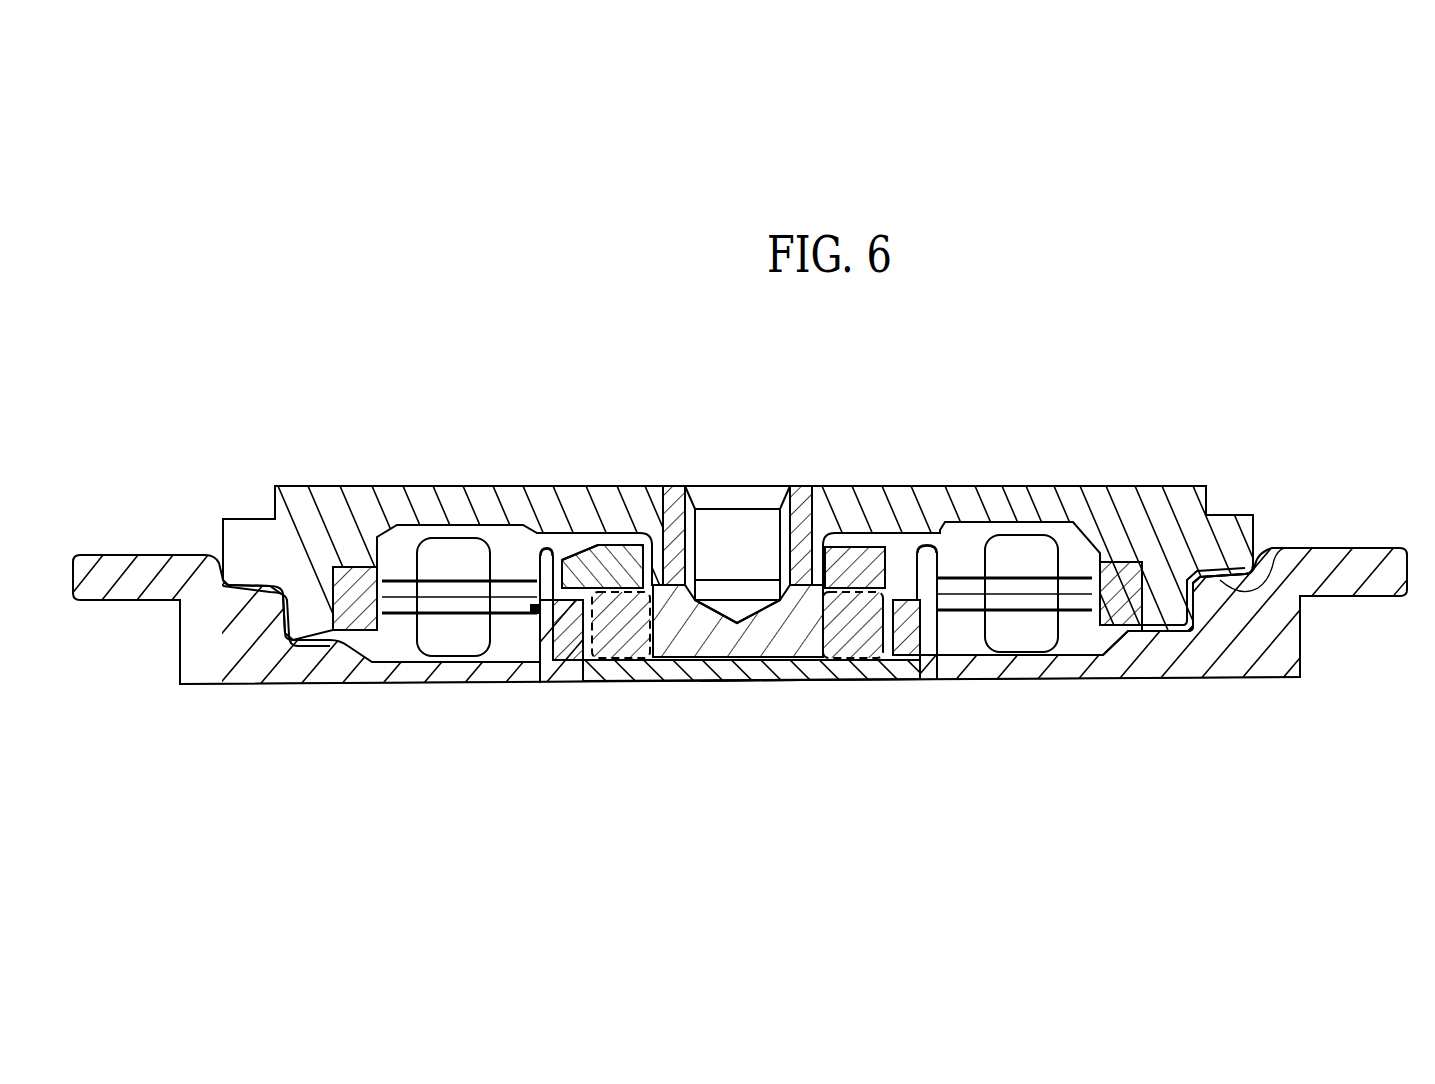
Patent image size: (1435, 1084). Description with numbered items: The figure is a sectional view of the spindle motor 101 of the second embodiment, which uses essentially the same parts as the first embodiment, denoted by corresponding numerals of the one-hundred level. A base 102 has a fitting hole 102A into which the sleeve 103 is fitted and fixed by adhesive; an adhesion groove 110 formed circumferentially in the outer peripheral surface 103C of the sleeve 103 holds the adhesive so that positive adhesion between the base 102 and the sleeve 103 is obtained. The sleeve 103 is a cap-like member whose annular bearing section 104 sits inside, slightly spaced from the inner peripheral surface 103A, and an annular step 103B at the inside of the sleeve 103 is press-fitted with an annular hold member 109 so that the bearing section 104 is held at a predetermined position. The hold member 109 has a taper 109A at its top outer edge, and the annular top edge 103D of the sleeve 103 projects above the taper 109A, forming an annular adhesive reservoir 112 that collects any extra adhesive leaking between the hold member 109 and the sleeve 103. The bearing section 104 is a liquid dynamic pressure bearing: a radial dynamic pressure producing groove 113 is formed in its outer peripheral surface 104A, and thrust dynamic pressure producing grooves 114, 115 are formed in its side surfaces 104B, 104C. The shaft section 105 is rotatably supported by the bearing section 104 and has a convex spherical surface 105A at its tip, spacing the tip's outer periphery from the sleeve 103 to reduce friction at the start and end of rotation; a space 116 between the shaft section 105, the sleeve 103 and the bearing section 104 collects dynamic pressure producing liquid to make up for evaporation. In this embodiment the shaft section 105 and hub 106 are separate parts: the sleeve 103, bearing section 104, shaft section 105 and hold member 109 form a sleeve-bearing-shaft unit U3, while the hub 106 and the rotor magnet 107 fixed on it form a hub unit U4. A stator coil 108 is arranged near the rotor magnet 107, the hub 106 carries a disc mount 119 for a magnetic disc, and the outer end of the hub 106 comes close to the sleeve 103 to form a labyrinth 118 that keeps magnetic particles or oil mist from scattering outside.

The spindle motor 101 is at (1085, 249).
The base 102 is at (208, 682).
The fitting hole 102A is at (568, 655).
The sleeve 103 is at (650, 672).
The inner peripheral surface 103A is at (900, 655).
The annular step 103B is at (932, 545).
The outer peripheral surface 103C is at (528, 655).
The annular top edge 103D is at (550, 548).
The bearing section 104 is at (882, 660).
The outer peripheral surface 104A is at (600, 658).
The side surface 104B is at (858, 660).
The side surface 104C is at (862, 592).
The shaft section 105 is at (800, 500).
The convex spherical surface 105A is at (800, 655).
The hub 106 is at (1178, 492).
The rotor magnet 107 is at (1120, 613).
The stator coil 108 is at (437, 645).
The hold member 109 is at (627, 548).
The taper 109A is at (580, 558).
The adhesion groove 110 is at (952, 615).
The adhesive reservoir 112 is at (567, 548).
The radial dynamic pressure producing groove 113 is at (520, 650).
The thrust dynamic pressure producing groove 114 is at (865, 635).
The thrust dynamic pressure producing groove 115 is at (922, 550).
The space 116 is at (655, 662).
The labyrinth 118 is at (1272, 560).
The disc mount 119 is at (236, 500).
The sleeve-bearing-shaft unit U3 is at (738, 692).
The hub unit U4 is at (1144, 476).